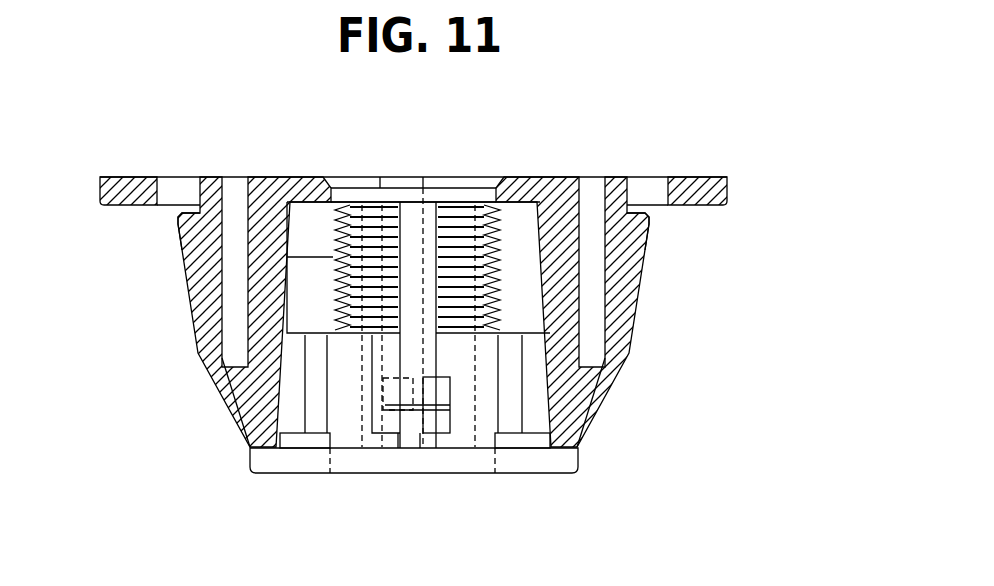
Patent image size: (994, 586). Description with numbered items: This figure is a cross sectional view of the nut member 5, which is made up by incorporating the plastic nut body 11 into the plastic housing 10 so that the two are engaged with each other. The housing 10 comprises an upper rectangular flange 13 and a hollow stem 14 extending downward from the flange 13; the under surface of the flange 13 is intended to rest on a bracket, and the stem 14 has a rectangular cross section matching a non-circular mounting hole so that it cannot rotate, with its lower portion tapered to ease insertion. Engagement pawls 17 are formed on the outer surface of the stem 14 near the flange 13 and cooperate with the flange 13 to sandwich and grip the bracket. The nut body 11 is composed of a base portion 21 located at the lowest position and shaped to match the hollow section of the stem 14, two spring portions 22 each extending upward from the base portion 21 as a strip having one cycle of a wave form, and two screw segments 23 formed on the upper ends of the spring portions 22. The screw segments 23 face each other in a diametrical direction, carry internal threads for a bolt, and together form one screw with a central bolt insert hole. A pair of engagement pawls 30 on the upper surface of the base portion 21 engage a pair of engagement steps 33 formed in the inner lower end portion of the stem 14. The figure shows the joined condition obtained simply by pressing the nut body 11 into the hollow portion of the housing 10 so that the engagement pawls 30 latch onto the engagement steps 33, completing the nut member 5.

The nut member 5 is at (716, 143).
The housing 10 is at (576, 156).
The nut body 11 is at (510, 494).
The flange 13 is at (728, 192).
The stem 14 is at (634, 321).
The engagement pawl 17 is at (184, 265).
The base portion 21 is at (298, 465).
The spring portion 22 is at (313, 397).
The screw segment 23 is at (313, 227).
The engagement pawl 30 is at (442, 393).
The engagement step 33 is at (396, 433).